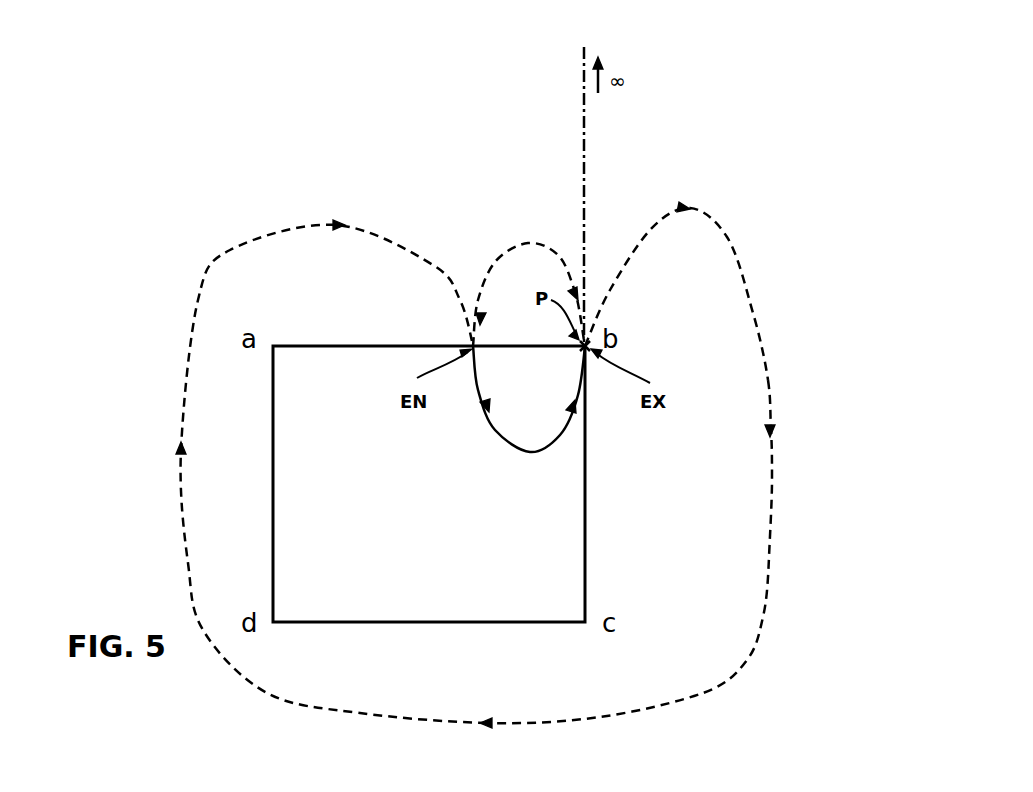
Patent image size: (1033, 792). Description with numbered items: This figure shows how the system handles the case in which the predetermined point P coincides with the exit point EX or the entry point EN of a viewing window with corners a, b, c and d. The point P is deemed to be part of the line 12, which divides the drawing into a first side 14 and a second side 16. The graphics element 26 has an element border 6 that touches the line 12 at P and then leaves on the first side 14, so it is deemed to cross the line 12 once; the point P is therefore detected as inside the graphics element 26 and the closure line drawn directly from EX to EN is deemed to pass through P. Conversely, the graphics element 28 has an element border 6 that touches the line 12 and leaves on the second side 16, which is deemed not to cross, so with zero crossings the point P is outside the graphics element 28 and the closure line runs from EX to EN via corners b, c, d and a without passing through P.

The element border 6 is at (481, 296).
The line 12 is at (592, 130).
The first side 14 is at (535, 174).
The second side 16 is at (691, 174).
The graphics element 26 is at (501, 232).
The graphics element 28 is at (776, 395).